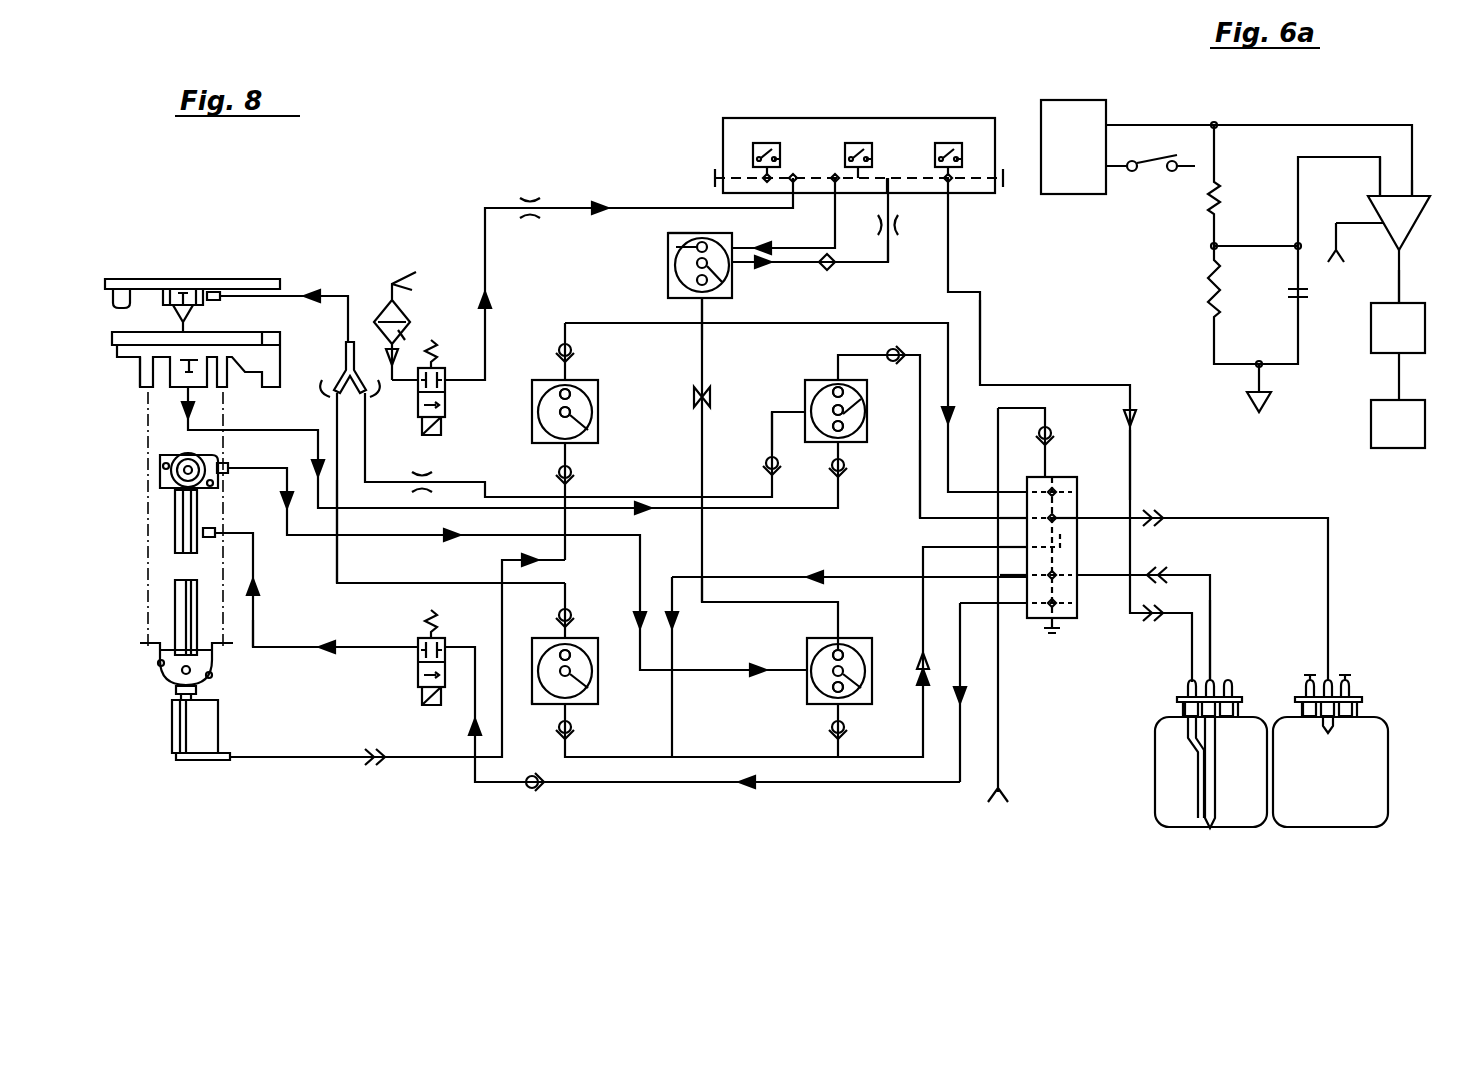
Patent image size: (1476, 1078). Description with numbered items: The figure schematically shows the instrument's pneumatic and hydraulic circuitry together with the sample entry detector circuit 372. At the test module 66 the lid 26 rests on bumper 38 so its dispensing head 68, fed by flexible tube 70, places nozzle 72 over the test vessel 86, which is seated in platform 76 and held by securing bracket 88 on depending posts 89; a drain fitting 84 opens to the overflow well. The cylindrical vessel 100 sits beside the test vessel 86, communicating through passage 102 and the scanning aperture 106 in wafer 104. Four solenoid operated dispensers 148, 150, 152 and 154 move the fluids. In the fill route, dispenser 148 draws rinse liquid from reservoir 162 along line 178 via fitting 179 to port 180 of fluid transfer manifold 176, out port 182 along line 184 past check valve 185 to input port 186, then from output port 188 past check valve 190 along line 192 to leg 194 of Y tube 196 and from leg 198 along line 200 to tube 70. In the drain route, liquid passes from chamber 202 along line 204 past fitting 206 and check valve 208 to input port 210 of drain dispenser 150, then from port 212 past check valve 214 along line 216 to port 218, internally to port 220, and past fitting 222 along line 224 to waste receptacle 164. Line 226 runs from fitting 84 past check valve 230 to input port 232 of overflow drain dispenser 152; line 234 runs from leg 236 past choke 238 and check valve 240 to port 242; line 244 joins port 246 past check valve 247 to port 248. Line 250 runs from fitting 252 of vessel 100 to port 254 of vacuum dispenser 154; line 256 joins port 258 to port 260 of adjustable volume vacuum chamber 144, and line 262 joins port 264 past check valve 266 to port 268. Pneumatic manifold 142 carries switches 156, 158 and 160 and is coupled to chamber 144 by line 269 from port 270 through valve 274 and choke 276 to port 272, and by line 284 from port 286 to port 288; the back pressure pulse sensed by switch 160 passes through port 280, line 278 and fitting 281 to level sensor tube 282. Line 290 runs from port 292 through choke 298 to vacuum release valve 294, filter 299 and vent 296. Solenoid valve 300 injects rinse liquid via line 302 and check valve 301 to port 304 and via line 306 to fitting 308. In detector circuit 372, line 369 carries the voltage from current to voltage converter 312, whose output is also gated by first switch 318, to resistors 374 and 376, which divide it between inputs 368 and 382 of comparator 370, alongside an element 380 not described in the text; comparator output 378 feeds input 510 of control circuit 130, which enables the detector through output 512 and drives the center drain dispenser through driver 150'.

In FIG. 8, the lid 26 is at (120, 278).
In FIG. 8, the bumper 38 is at (114, 300).
In FIG. 8, the dispensing head 68 is at (181, 289).
In FIG. 8, the flexible tube 70 is at (214, 300).
In FIG. 8, the nozzle 72 is at (176, 312).
In FIG. 8, the platform 76 is at (267, 323).
In FIG. 8, the test module 66 is at (92, 388).
In FIG. 8, the depending posts 89 is at (142, 374).
In FIG. 8, the drain fitting 84 is at (176, 374).
In FIG. 8, the line 200 is at (346, 294).
In FIG. 8, the leg of Y tube 198 is at (348, 342).
In FIG. 8, the Y tube 196 is at (340, 370).
In FIG. 8, the leg of Y tube 194 is at (322, 395).
In FIG. 8, the line 226 is at (178, 430).
In FIG. 8, the scanning aperture 106 is at (192, 464).
In FIG. 8, the wafer 104 is at (163, 476).
In FIG. 8, the fitting 252 is at (224, 466).
In FIG. 8, the cylindrical vessel 100 is at (176, 514).
In FIG. 8, the fitting 308 is at (210, 530).
In FIG. 8, the line 250 is at (330, 536).
In FIG. 8, the test vessel 86 is at (178, 632).
In FIG. 8, the securing bracket 88 is at (148, 665).
In FIG. 8, the through passage 102 is at (178, 690).
In FIG. 8, the chamber 202 is at (210, 726).
In FIG. 8, the line 204 is at (338, 758).
In FIG. 8, the fitting 206 is at (375, 765).
In FIG. 8, the line 306 is at (310, 646).
In FIG. 8, the solenoid valve 300 is at (418, 643).
In FIG. 8, the check valve 301 is at (538, 790).
In FIG. 8, the line 302 is at (660, 785).
In FIG. 8, the leg of Y tube 236 is at (582, 445).
In FIG. 8, the choke 238 is at (438, 480).
In FIG. 8, the vacuum release solenoid valve 294 is at (447, 385).
In FIG. 8, the vent 296 is at (388, 282).
In FIG. 8, the filter 299 is at (405, 312).
In FIG. 8, the choke 298 is at (548, 178).
In FIG. 8, the line 290 is at (628, 206).
In FIG. 8, the port 292 is at (790, 206).
In FIG. 8, the pneumatic manifold 142 is at (908, 82).
In FIG. 8, the switch 156 is at (766, 143).
In FIG. 8, the switch 158 is at (858, 143).
In FIG. 8, the switch 160 is at (948, 143).
In FIG. 8, the port 286 is at (833, 176).
In FIG. 8, the line 284 is at (812, 246).
In FIG. 8, the adjustable volume vacuum chamber 144 is at (668, 250).
In FIG. 8, the port 288 is at (680, 240).
In FIG. 8, the port 270 is at (668, 272).
In FIG. 8, the valve 274 is at (832, 270).
In FIG. 8, the choke 276 is at (892, 250).
In FIG. 8, the port 272 is at (892, 200).
In FIG. 8, the port 260 is at (676, 297).
In FIG. 8, the line 216 is at (712, 302).
In FIG. 8, the line 269 is at (782, 308).
In FIG. 8, the port 280 is at (952, 195).
In FIG. 8, the line 278 is at (984, 310).
In FIG. 8, the test vessel drain dispenser 150 is at (598, 441).
In FIG. 8, the output port 212 is at (560, 390).
In FIG. 8, the check valve 214 is at (572, 360).
In FIG. 8, the input port 210 is at (560, 414).
In FIG. 8, the check valve 208 is at (575, 478).
In FIG. 8, the line 192 is at (474, 580).
In FIG. 8, the check valve 190 is at (568, 608).
In FIG. 8, the input port 186 is at (590, 690).
In FIG. 8, the output port 188 is at (570, 650).
In FIG. 8, the solenoid operated dispenser 148 is at (545, 706).
In FIG. 8, the check valve 185 is at (572, 728).
In FIG. 8, the line 184 is at (875, 576).
In FIG. 8, the overflow drain dispenser 152 is at (805, 400).
In FIG. 8, the port 246 is at (836, 386).
In FIG. 8, the check valve 247 is at (896, 330).
In FIG. 8, the port 242 is at (848, 412).
In FIG. 8, the input port 232 is at (845, 432).
In FIG. 8, the check valve 230 is at (843, 474).
In FIG. 8, the check valve 240 is at (780, 468).
In FIG. 8, the line 234 is at (766, 455).
In FIG. 8, the line 244 is at (916, 520).
In FIG. 8, the port 180 is at (1078, 575).
In FIG. 8, the port 248 is at (1027, 518).
In FIG. 8, the port 268 is at (1027, 547).
In FIG. 8, the port 182 is at (1027, 575).
In FIG. 8, the port 220 is at (1077, 516).
In FIG. 8, the port 218 is at (1035, 472).
In FIG. 8, the fluid transfer manifold 176 is at (1064, 470).
In FIG. 8, the port 304 is at (1027, 620).
In FIG. 8, the fitting 222 is at (1142, 516).
In FIG. 8, the line 224 is at (1258, 516).
In FIG. 8, the fitting 179 is at (1148, 573).
In FIG. 8, the fitting 281 is at (1142, 628).
In FIG. 8, the line 178 is at (1200, 625).
In FIG. 8, the exterior storage vessel 162 is at (1155, 765).
In FIG. 8, the level sensor tube 282 is at (1158, 728).
In FIG. 8, the waste receptacle 164 is at (1385, 760).
In FIG. 8, the line 256 is at (772, 604).
In FIG. 8, the solenoid operated vacuum dispenser 154 is at (807, 688).
In FIG. 8, the port 258 is at (833, 652).
In FIG. 8, the port 254 is at (845, 652).
In FIG. 8, the port 264 is at (833, 694).
In FIG. 8, the check valve 266 is at (846, 735).
In FIG. 8, the line 262 is at (845, 758).
In FIG. 8, the driver 150' is at (1404, 447).
In FIG. 6a, the sample entry detector circuit 372 is at (1160, 74).
In FIG. 6a, the current to voltage converter 312 is at (1082, 100).
In FIG. 6a, the line 369 is at (1172, 124).
In FIG. 6a, the first switch 318 is at (1150, 178).
In FIG. 6a, the resistor 374 is at (1220, 196).
In FIG. 6a, the resistor 376 is at (1220, 286).
In FIG. 6a, the capacitor 380 is at (1306, 298).
In FIG. 6a, the input 382 is at (1380, 194).
In FIG. 6a, the comparator 370 is at (1410, 218).
In FIG. 6a, the input 368 is at (1415, 196).
In FIG. 6a, the output 512 is at (1338, 262).
In FIG. 6a, the comparator output 378 is at (1404, 252).
In FIG. 6a, the input 510 is at (1402, 284).
In FIG. 6a, the control circuit 130 is at (1371, 345).